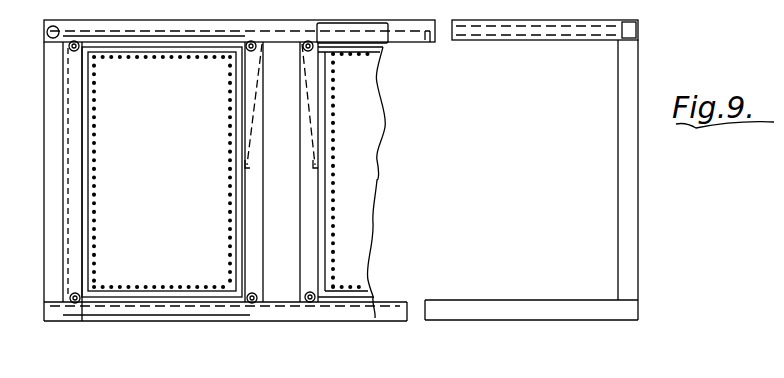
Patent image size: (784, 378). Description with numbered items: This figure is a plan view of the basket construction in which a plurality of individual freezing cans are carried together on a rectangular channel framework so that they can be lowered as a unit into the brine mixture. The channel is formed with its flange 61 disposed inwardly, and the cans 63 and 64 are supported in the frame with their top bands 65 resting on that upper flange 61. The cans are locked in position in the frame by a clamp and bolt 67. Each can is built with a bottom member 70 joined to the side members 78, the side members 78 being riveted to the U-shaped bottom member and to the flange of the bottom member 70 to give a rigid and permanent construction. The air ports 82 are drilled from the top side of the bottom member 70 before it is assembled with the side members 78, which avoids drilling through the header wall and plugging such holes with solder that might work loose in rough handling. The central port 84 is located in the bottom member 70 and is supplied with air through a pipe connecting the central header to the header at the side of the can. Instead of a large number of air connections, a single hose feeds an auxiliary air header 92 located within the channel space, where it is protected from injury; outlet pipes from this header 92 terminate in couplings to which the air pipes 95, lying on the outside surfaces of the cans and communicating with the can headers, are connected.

The flange 61 is at (426, 32).
The can 63 is at (103, 135).
The can 64 is at (387, 128).
The top band 65 is at (195, 32).
The bolt 67 is at (68, 50).
The bottom member 70 is at (170, 232).
The side member 78 is at (87, 181).
The air port 82 is at (173, 59).
The central port 84 is at (161, 174).
The auxiliary air header 92 is at (65, 43).
The air pipe 95 is at (296, 78).